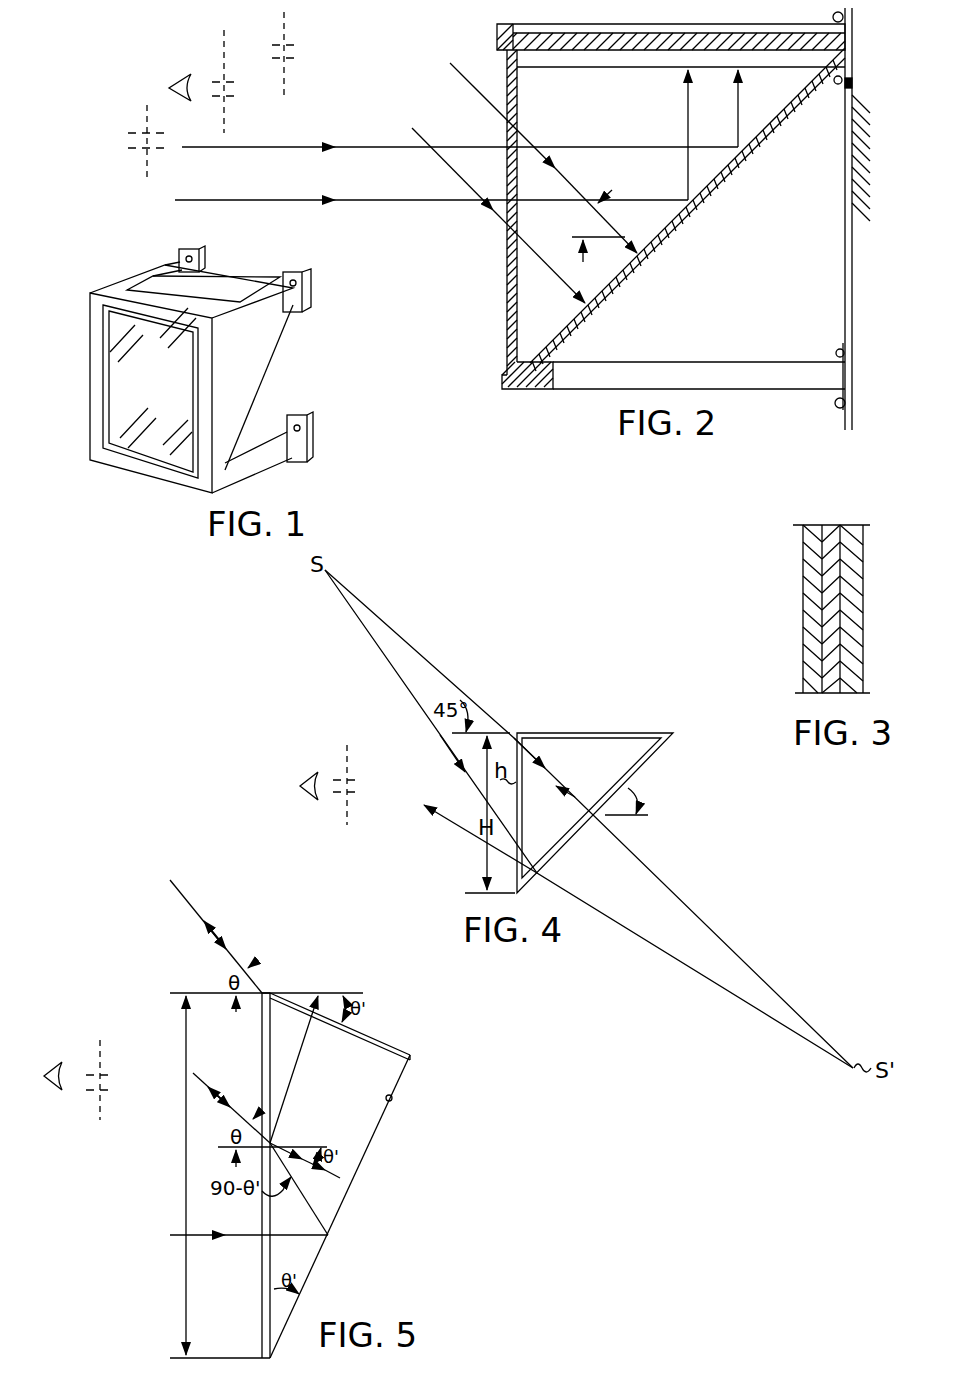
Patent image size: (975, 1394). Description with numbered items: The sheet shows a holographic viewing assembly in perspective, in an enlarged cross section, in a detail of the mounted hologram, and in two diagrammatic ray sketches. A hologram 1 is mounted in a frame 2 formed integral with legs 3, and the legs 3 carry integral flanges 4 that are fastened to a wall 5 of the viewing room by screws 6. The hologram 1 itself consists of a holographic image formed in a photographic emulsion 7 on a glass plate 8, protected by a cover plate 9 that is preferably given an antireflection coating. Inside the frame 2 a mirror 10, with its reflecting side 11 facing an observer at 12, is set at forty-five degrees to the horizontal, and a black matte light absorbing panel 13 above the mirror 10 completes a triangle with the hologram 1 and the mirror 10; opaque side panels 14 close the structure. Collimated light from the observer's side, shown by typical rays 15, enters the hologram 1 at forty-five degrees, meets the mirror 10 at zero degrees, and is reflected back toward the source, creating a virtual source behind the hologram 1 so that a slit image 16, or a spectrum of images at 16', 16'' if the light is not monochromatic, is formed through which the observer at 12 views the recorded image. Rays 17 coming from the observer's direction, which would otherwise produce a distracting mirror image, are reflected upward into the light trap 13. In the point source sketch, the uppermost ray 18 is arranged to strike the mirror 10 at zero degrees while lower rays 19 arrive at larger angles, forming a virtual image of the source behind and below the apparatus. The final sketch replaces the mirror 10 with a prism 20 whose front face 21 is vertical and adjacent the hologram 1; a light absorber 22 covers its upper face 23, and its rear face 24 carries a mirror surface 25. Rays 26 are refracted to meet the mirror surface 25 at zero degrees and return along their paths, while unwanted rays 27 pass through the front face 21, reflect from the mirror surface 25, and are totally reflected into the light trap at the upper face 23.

In FIG. 1, the hologram 1 is at (108, 375).
In FIG. 2, the hologram 1 is at (507, 288).
In FIG. 3, the hologram 1 is at (798, 590).
In FIG. 5, the hologram 1 is at (262, 1048).
In FIG. 1, the frame 2 is at (165, 336).
In FIG. 2, the frame 2 is at (500, 390).
In FIG. 1, the legs 3 is at (238, 303).
In FIG. 2, the legs 3 is at (603, 67).
In FIG. 1, the flanges 4 is at (180, 250).
In FIG. 2, the flanges 4 is at (833, 13).
In FIG. 2, the wall 5 is at (845, 262).
In FIG. 2, the screws 6 is at (838, 84).
In FIG. 3, the photographic emulsion 7 is at (830, 527).
In FIG. 3, the glass plate 8 is at (866, 578).
In FIG. 3, the cover plate 9 is at (808, 632).
In FIG. 2, the mirror 10 is at (720, 195).
In FIG. 4, the mirror 10 is at (655, 768).
In FIG. 2, the reflecting side 11 is at (660, 233).
In FIG. 2, the observer 12 is at (178, 80).
In FIG. 4, the observer 12 is at (305, 775).
In FIG. 5, the observer 12 is at (52, 1062).
In FIG. 2, the light absorbing panel 13 is at (637, 33).
In FIG. 4, the light absorbing panel 13 is at (589, 728).
In FIG. 1, the opaque side panels 14 is at (262, 343).
In FIG. 2, the opaque side panels 14 is at (527, 92).
In FIG. 2, the rays 15 is at (452, 65).
In FIG. 2, the slit image 16 is at (236, 80).
In FIG. 4, the slit image 16 is at (369, 786).
In FIG. 5, the slit image 16 is at (114, 1070).
In FIG. 2, the slit image 16' is at (299, 54).
In FIG. 2, the slit image 16'' is at (126, 147).
In FIG. 2, the rays 17 is at (282, 147).
In FIG. 4, the uppermost ray 18 is at (424, 640).
In FIG. 4, the lower rays 19 is at (380, 650).
In FIG. 5, the prism 20 is at (368, 1155).
In FIG. 5, the front face 21 is at (262, 1224).
In FIG. 5, the light absorber 22 is at (373, 1036).
In FIG. 5, the upper face 23 is at (374, 1047).
In FIG. 5, the rear face 24 is at (343, 1200).
In FIG. 5, the mirror surface 25 is at (392, 1097).
In FIG. 5, the rays 26 is at (185, 898).
In FIG. 5, the unwanted rays 27 is at (246, 1236).